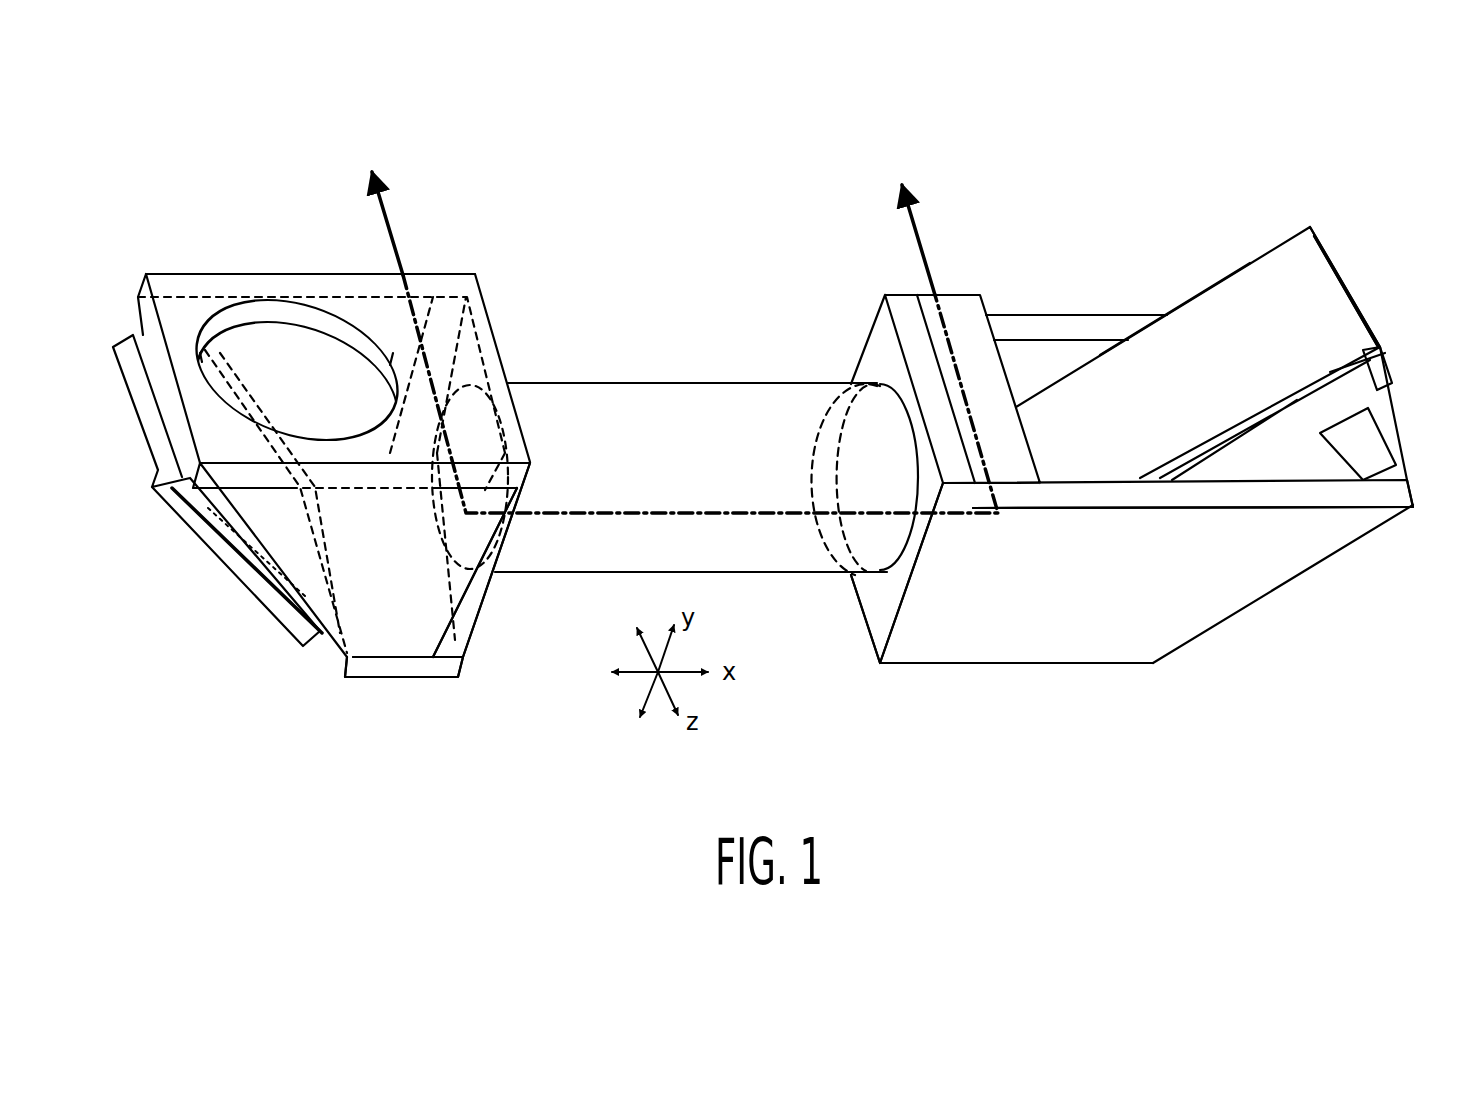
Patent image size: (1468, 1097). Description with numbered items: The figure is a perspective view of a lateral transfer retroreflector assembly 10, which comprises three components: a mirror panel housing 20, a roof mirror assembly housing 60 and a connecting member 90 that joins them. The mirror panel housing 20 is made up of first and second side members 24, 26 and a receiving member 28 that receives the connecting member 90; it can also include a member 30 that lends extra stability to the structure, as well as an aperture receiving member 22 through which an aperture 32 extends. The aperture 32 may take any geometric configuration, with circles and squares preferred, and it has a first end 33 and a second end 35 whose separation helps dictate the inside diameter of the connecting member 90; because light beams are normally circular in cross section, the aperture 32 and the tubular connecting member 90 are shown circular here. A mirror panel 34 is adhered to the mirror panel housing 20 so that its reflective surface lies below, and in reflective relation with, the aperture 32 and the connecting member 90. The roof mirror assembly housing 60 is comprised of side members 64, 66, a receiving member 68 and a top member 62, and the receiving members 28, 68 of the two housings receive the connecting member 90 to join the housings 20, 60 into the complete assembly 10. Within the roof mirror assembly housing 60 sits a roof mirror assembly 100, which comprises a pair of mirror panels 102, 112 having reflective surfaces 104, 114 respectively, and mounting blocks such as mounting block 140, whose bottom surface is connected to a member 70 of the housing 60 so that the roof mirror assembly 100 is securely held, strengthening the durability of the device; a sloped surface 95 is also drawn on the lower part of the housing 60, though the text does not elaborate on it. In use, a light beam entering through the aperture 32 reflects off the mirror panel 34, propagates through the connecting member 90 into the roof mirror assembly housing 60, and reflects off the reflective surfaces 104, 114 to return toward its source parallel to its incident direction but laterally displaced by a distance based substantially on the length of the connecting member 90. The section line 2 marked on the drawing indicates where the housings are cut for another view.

The section line 2- 2 is at (679, 324).
The lateral transfer retroreflector assembly 10 is at (656, 262).
The mirror panel housing 20 is at (448, 268).
The aperture receiving member 22 is at (165, 283).
The first side member 24 is at (283, 597).
The second side member 26 is at (287, 327).
The receiving member 28 is at (473, 613).
The member 30 is at (417, 657).
The aperture 32 is at (245, 345).
The first end 33 is at (200, 352).
The mirror panel 34 is at (197, 520).
The second end 35 is at (393, 353).
The roof mirror assembly housing 60 is at (978, 287).
The top member 62 is at (948, 303).
The side member 64 is at (1040, 652).
The side member 66 is at (1030, 327).
The receiving member 68 is at (898, 655).
The member 70 is at (1410, 450).
The connecting member 90 is at (679, 382).
The sloped surface 95 is at (1240, 617).
The roof mirror assembly 100 is at (1313, 228).
The mirror panel 102 is at (1337, 267).
The reflective surface 104 is at (1283, 270).
The mirror panel 112 is at (1378, 370).
The reflective surface 114 is at (1343, 360).
The mounting block 140 is at (1373, 417).